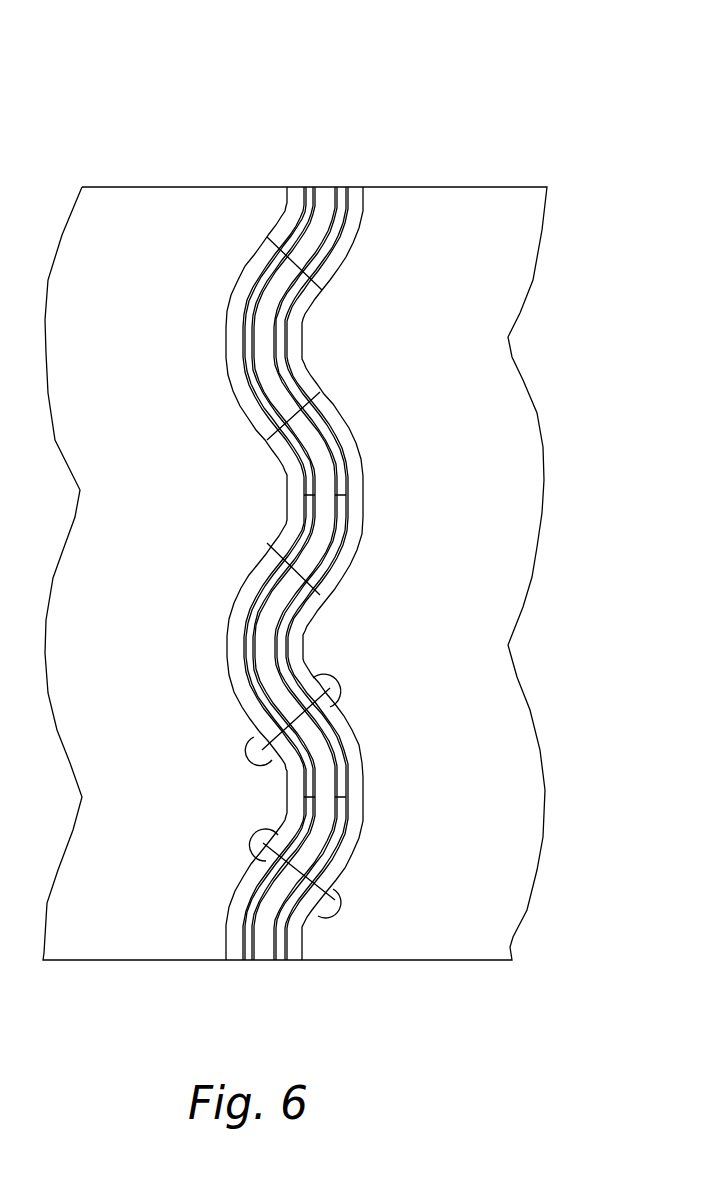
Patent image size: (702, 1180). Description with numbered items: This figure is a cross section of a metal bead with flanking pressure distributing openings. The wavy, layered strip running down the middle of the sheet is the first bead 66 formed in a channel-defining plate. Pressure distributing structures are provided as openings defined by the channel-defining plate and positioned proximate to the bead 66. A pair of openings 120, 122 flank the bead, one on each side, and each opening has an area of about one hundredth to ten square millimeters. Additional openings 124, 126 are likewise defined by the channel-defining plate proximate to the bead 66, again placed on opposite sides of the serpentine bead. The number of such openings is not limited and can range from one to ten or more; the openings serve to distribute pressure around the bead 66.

The first bead 66 is at (320, 210).
The opening 126 is at (330, 683).
The opening 124 is at (256, 750).
The opening 120 is at (264, 840).
The opening 122 is at (333, 902).